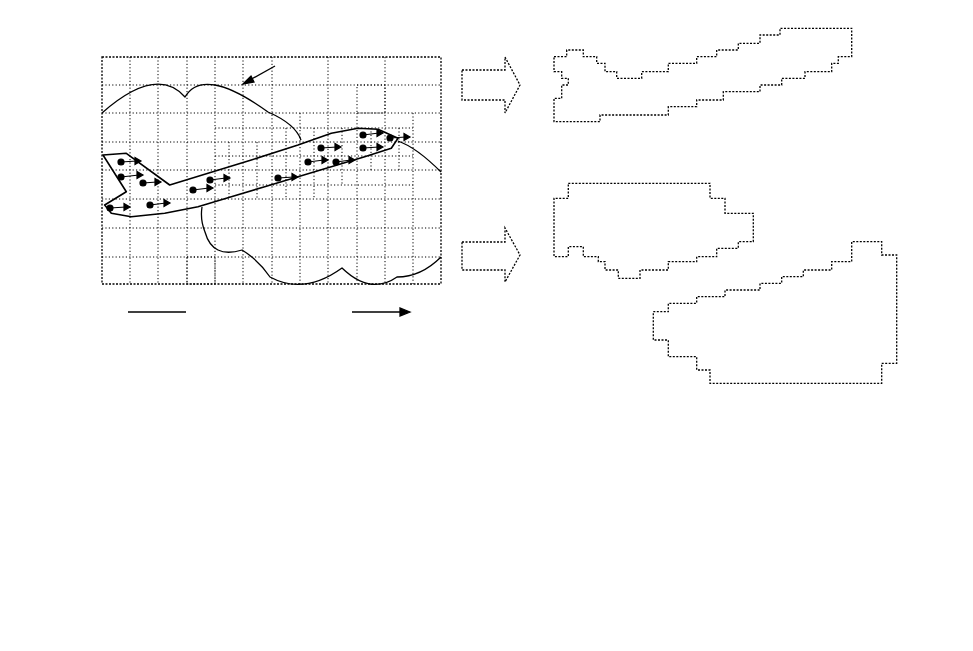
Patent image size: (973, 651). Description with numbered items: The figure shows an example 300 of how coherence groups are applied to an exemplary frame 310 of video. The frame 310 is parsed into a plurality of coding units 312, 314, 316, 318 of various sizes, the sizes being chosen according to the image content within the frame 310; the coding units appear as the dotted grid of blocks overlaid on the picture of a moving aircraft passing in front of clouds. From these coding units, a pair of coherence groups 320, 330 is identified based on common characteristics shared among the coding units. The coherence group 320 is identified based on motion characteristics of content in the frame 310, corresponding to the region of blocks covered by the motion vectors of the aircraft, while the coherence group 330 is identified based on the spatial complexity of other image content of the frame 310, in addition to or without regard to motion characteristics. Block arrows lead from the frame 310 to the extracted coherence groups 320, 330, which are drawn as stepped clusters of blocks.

The motion vector coherence grouping process 300 is at (499, 200).
The frame 310 is at (271, 176).
The coding unit 312 is at (385, 87).
The coding unit 314 is at (185, 265).
The coding unit 316 is at (402, 112).
The coding unit 318 is at (117, 228).
The coherence group 320 is at (703, 64).
The coherence group 330 is at (653, 220).